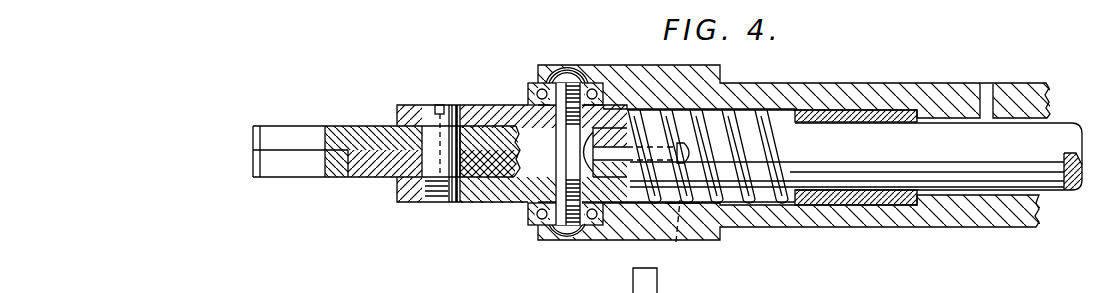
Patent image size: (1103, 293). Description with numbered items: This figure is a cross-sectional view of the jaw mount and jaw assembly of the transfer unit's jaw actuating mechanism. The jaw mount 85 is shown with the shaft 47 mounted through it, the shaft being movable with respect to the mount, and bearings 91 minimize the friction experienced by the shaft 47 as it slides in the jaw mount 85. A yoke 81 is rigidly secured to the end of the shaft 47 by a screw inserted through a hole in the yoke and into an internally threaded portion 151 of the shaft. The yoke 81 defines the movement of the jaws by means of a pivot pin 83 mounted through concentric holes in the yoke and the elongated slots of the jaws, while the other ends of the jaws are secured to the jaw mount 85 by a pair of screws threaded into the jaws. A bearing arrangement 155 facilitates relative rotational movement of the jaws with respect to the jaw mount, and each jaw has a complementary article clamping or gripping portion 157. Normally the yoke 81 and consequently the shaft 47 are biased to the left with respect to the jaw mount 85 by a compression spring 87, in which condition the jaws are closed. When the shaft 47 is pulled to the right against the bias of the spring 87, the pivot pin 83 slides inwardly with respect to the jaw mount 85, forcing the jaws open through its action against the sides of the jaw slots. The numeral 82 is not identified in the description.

The shaft 47 is at (990, 148).
The yoke 81 is at (491, 105).
The pin 82 is at (581, 152).
The pivot pin 83 is at (447, 105).
The jaw mount 85 is at (633, 65).
The compression spring 87 is at (735, 205).
The bearings 91 is at (868, 202).
The internally threaded portion 151 is at (676, 242).
The bearing arrangement 155 is at (531, 83).
The article clamping or gripping portion 157 is at (285, 180).